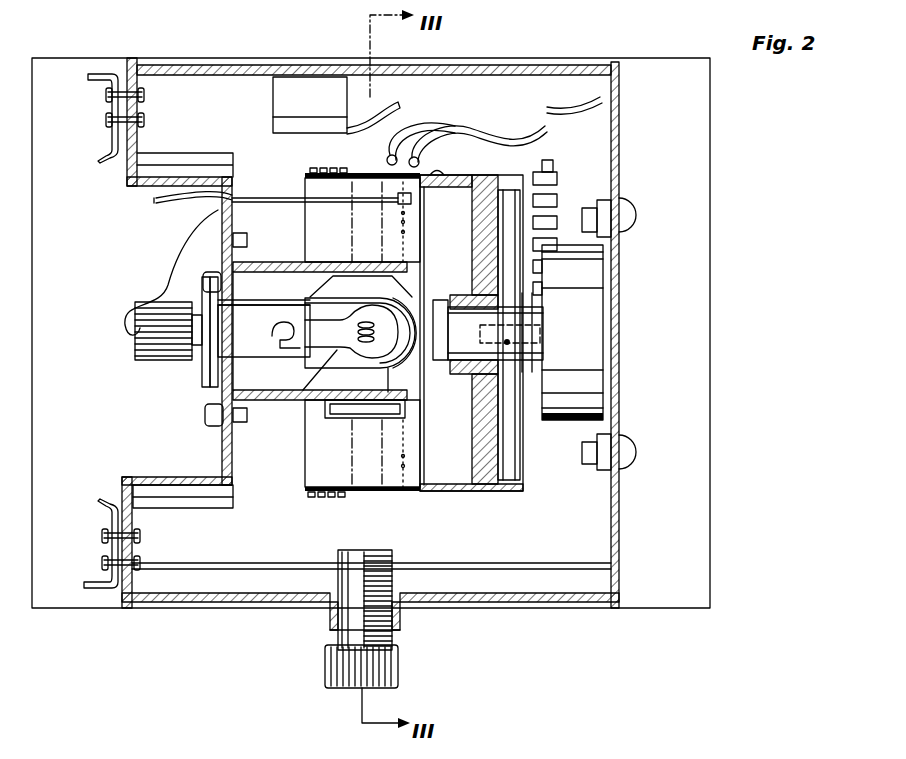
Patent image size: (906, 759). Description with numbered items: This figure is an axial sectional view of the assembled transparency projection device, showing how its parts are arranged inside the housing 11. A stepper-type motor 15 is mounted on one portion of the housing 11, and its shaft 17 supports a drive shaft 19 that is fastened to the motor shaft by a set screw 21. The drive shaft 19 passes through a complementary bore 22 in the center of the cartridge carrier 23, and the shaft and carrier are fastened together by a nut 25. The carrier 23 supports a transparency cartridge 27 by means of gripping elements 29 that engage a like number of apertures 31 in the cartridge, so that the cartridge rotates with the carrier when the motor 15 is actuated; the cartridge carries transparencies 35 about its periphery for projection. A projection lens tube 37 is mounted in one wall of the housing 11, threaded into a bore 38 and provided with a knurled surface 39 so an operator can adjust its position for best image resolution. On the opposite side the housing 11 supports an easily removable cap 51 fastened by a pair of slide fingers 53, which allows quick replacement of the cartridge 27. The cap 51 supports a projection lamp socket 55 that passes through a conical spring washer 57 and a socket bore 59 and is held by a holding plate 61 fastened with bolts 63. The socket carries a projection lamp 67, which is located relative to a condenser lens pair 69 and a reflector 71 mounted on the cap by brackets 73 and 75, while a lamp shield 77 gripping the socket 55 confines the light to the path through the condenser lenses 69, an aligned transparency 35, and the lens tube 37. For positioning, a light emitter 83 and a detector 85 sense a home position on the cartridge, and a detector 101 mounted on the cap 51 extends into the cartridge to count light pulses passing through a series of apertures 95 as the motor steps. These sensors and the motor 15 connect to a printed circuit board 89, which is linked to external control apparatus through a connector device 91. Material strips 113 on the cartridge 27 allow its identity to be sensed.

The housing 11 is at (538, 628).
The motor 15 is at (582, 294).
The shaft 17 is at (543, 331).
The drive shaft 19 is at (510, 388).
The set screw 21 is at (510, 344).
The bore 22 is at (480, 310).
The cartridge carrier 23 is at (485, 440).
The nut 25 is at (436, 366).
The transparency cartridge 27 is at (456, 493).
The gripping elements 29 is at (437, 174).
The apertures 31 is at (420, 494).
The transparencies 35 is at (383, 182).
The projection lens tube 37 is at (343, 635).
The bore 38 is at (398, 617).
The knurled surface 39 is at (400, 668).
The cap 51 is at (183, 493).
The slide fingers 53 is at (100, 85).
The projection lamp socket 55 is at (258, 304).
The conical spring washer 57 is at (222, 350).
The socket bore 59 is at (230, 318).
The holding plate 61 is at (205, 375).
The bolts 63 is at (213, 263).
The projection lamp 67 is at (307, 401).
The condenser lens pair 69 is at (340, 422).
The reflector 71 is at (385, 290).
The bracket 73 is at (232, 445).
The bracket 75 is at (264, 264).
The lamp shield 77 is at (404, 412).
The light emitter 83 is at (417, 157).
The detector 85 is at (389, 156).
The printed circuit board 89 is at (597, 101).
The connector device 91 is at (315, 80).
The apertures 95 is at (405, 185).
The detector 101 is at (432, 198).
The material strips 113 is at (326, 172).